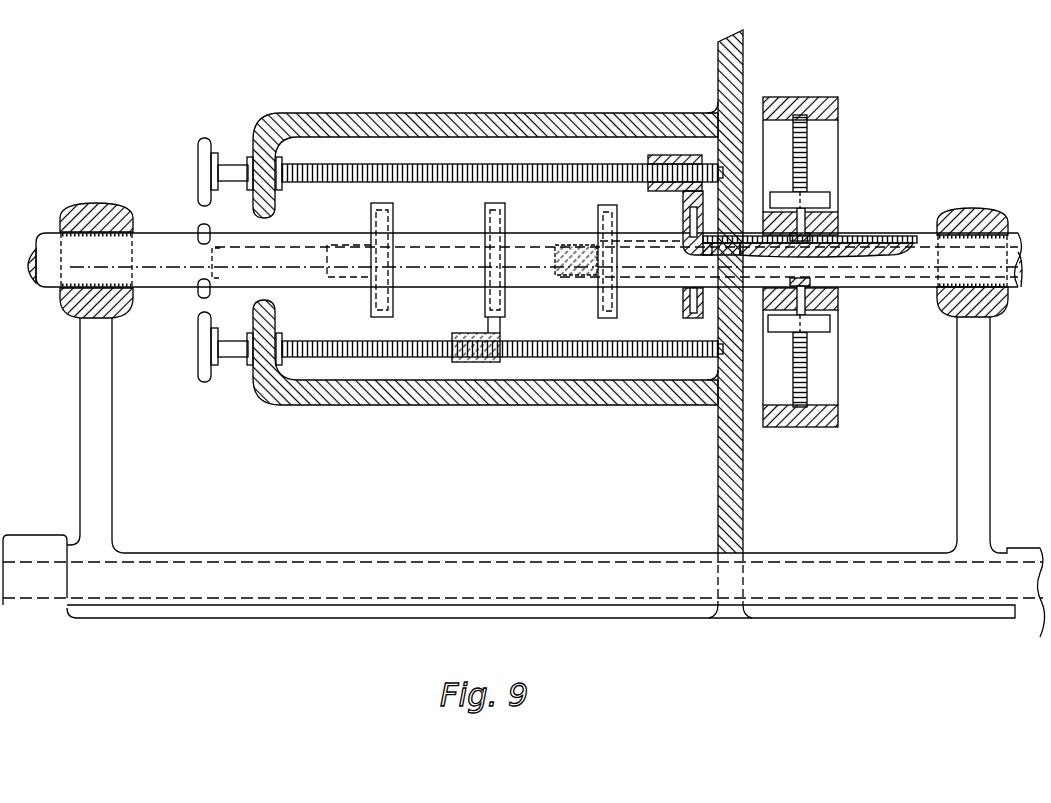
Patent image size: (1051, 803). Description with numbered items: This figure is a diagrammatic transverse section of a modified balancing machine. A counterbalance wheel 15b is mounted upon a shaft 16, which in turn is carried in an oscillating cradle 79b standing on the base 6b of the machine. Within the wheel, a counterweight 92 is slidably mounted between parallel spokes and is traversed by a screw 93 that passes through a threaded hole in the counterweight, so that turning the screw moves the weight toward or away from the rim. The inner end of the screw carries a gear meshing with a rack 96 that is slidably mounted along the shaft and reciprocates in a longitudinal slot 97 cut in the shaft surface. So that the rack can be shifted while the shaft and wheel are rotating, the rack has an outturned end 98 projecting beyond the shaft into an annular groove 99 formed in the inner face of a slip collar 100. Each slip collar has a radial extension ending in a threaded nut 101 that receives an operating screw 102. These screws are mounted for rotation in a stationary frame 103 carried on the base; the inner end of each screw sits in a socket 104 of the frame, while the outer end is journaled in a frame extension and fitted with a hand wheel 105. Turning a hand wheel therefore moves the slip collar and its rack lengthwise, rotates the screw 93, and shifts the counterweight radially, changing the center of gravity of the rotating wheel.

The shaft 16 is at (166, 290).
The oscillating cradle 79b is at (106, 480).
The base 6b is at (70, 596).
The stationary frame 103 is at (713, 470).
The operating screw 102 is at (303, 243).
The hand wheel 105 is at (198, 160).
The threaded nut 101 is at (650, 155).
The longitudinal slot 97 is at (635, 240).
The annular groove 99 is at (684, 208).
The outturned end 98 is at (693, 249).
The rack 96 is at (875, 243).
The slip collar 100 is at (700, 200).
The counterbalance wheel 15b is at (838, 105).
The socket 104 is at (753, 150).
The screw 93 is at (808, 160).
The counterweight 92 is at (823, 198).